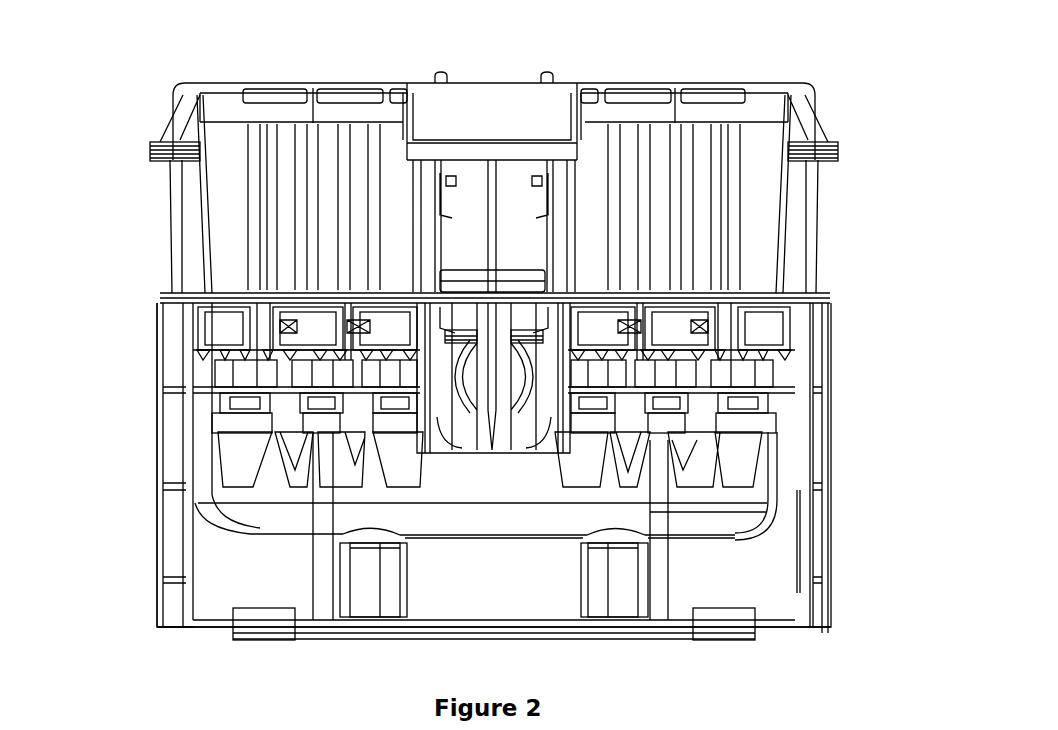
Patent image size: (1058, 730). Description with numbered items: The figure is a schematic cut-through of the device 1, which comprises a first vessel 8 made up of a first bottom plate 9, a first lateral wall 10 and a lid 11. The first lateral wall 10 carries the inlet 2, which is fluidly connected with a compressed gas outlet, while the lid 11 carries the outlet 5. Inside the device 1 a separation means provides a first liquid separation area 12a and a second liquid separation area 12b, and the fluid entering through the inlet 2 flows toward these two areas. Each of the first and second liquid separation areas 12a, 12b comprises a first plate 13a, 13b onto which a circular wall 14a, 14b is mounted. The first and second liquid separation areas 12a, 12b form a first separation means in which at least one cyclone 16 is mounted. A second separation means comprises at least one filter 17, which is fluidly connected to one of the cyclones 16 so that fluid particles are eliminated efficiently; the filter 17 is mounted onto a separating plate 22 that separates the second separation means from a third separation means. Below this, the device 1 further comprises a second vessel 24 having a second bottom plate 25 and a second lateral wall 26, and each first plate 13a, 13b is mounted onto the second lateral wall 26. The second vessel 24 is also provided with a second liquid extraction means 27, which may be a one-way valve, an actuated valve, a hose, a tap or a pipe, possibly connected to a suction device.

The device 1 is at (857, 120).
The inlet 2 is at (543, 370).
The outlet 5 is at (505, 130).
The first vessel 8 is at (163, 238).
The first bottom plate 9 is at (200, 627).
The first lateral wall 10 is at (185, 350).
The lid 11 is at (197, 86).
The first liquid separation area 12a is at (287, 386).
The second liquid separation area 12b is at (777, 357).
The first plate 13a is at (230, 425).
The first plate 13b is at (715, 428).
The circular wall 14a is at (440, 378).
The circular wall 14b is at (517, 360).
The cyclone 16 is at (287, 400).
The filter 17 is at (290, 177).
The separating plate 22 is at (265, 302).
The second vessel 24 is at (772, 521).
The second bottom plate 25 is at (700, 540).
The second lateral wall 26 is at (773, 495).
The second liquid extraction means 27 is at (800, 521).